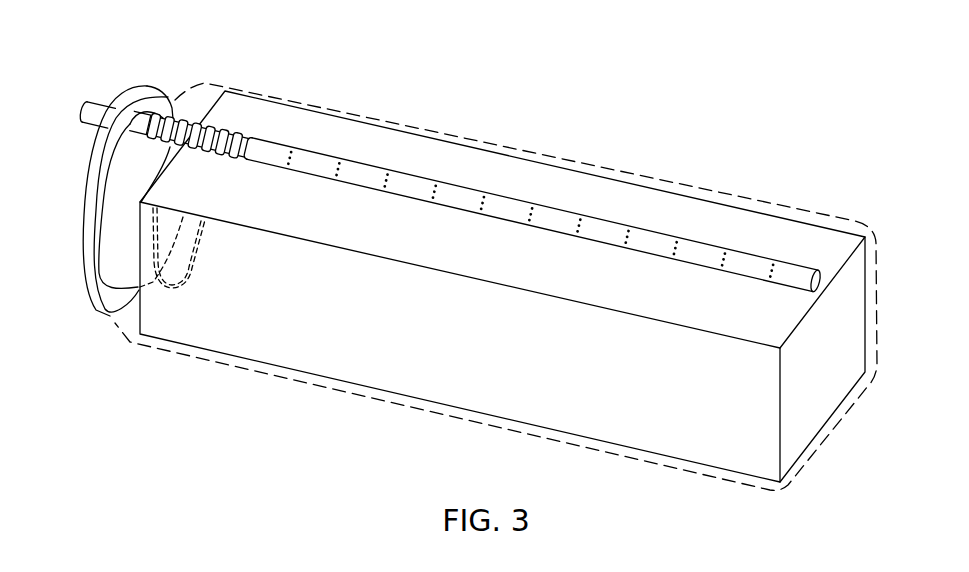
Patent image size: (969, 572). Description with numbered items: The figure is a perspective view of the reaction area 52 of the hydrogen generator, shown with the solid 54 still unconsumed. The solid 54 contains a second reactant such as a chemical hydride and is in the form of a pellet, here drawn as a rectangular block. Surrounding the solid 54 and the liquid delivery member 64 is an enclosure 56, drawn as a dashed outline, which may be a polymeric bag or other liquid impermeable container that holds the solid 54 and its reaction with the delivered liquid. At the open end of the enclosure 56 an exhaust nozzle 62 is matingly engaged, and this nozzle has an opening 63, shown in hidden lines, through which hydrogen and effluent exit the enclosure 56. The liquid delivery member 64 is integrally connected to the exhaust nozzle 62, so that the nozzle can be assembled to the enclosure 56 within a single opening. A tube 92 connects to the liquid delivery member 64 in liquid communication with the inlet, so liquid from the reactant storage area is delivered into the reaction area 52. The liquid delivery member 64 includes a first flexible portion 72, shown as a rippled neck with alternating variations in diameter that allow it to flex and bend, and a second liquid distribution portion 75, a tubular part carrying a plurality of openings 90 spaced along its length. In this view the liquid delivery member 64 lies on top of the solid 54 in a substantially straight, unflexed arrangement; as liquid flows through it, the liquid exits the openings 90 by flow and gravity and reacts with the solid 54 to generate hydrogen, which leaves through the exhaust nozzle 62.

The reaction area 52 is at (781, 168).
The solid 54 is at (698, 218).
The enclosure 56 is at (580, 157).
The exhaust nozzle 62 is at (86, 194).
The opening 63 is at (186, 274).
The liquid delivery member 64 is at (797, 252).
The flexible portion 72 is at (226, 130).
The liquid distribution portion 75 is at (657, 240).
The openings 90 is at (489, 197).
The tube 92 is at (104, 106).